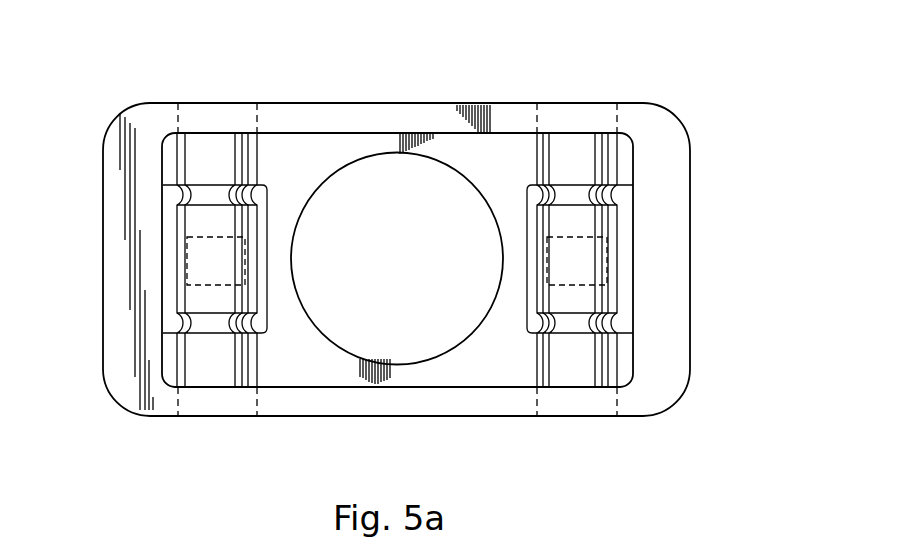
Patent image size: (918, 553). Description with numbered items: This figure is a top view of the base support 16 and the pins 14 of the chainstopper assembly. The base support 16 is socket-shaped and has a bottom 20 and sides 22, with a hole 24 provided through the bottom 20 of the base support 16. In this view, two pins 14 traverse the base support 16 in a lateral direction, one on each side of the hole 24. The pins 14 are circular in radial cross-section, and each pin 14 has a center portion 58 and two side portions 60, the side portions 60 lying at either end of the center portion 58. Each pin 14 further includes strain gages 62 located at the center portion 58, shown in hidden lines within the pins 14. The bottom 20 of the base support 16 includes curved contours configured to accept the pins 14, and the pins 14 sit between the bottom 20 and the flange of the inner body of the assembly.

The pins 14 is at (514, 166).
The base support 16 is at (692, 177).
The bottom 20 is at (317, 152).
The sides 22 is at (672, 295).
The hole 24 is at (426, 274).
The center portion 58 is at (208, 223).
The side portions 60 is at (208, 157).
The strain gages 62 is at (230, 274).